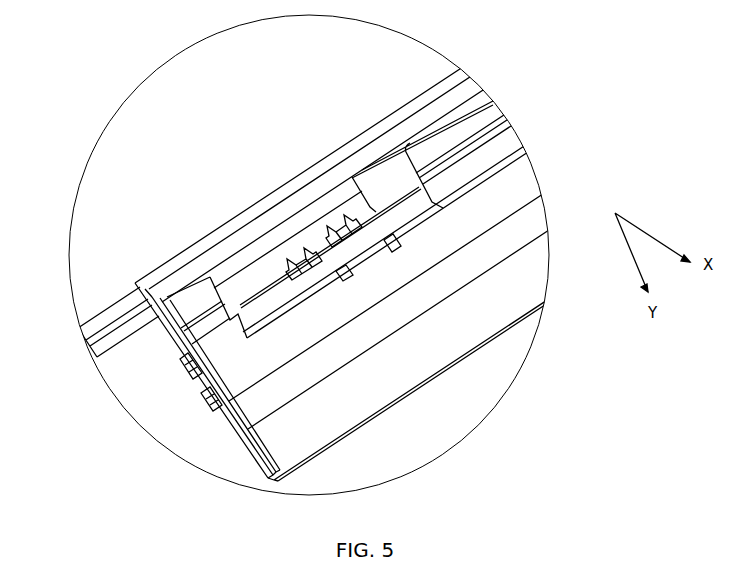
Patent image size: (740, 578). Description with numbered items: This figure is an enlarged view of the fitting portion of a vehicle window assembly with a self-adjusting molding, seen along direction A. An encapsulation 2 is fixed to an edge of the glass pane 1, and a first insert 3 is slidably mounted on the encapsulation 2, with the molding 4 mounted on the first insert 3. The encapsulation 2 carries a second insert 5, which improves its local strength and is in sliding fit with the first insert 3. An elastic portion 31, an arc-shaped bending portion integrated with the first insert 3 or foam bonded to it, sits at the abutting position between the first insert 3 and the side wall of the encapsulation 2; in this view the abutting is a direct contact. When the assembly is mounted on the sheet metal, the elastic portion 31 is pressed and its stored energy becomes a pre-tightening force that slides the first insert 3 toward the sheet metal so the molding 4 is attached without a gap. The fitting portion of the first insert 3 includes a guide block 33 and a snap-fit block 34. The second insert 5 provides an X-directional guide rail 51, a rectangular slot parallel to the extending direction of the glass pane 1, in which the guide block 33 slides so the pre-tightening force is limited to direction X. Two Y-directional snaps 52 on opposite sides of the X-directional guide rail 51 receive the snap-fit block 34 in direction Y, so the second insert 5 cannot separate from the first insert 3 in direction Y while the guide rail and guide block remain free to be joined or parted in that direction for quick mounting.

The glass pane 1 is at (103, 335).
The encapsulation 2 is at (167, 330).
The first insert 3 is at (280, 428).
The molding 4 is at (217, 430).
The second insert 5 is at (316, 207).
The elastic portion 31 is at (462, 128).
The guide block 33 is at (353, 280).
The snap-fit block 34 is at (282, 228).
The X-directional guide rail 51 is at (330, 236).
The Y-directional snap 52 is at (289, 252).